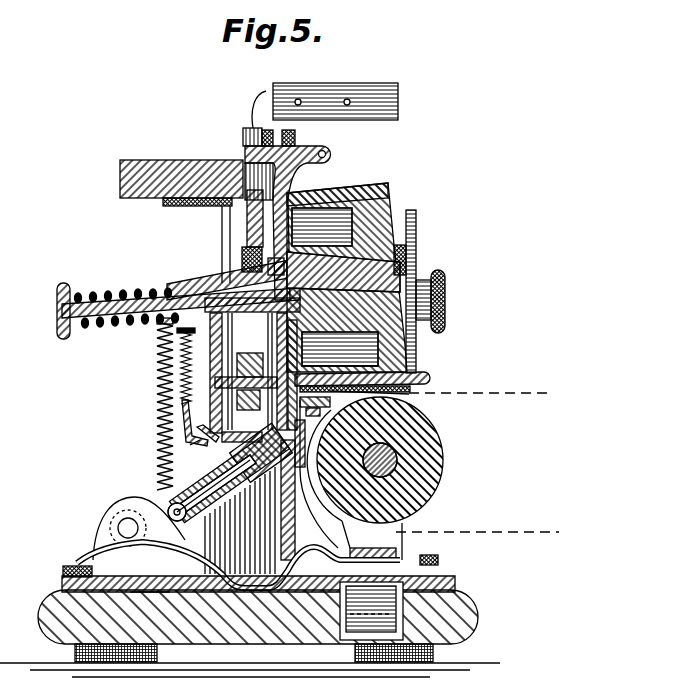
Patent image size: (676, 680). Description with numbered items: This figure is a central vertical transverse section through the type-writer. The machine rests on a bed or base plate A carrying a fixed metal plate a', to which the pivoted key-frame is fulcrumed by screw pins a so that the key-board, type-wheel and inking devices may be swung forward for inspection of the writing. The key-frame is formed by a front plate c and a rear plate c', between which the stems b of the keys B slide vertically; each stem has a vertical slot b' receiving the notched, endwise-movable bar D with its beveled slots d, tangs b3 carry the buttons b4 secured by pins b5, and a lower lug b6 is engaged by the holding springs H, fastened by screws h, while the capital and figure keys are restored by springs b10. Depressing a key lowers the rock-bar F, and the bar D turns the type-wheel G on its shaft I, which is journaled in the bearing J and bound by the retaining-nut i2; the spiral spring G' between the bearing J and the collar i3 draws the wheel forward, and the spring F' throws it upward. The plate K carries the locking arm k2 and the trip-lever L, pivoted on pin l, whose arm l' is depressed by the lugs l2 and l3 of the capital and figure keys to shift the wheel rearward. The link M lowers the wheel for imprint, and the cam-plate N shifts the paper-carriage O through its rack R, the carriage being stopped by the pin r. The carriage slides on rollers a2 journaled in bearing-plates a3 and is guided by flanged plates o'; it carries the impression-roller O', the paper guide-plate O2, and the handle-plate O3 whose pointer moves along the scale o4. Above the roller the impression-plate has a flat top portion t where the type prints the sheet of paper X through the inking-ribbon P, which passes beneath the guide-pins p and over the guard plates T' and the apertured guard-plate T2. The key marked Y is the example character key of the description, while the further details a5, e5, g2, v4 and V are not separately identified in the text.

The keys B is at (196, 158).
The key buttons b4 is at (375, 92).
The pins b5 is at (304, 102).
The capital-key lug l2 is at (250, 127).
The figure-key lug l3 is at (296, 139).
The trip-lever arm l' is at (247, 169).
The trip-lever L is at (288, 223).
The pivot pin l is at (331, 148).
The key-stem slot b' is at (255, 218).
The block a5 is at (241, 257).
The key tangs b3 is at (190, 207).
The front plate c is at (213, 244).
The shaft bearing J is at (190, 283).
The spiral spring G' is at (181, 293).
The type-wheel shaft I is at (104, 322).
The retaining collar i3 is at (57, 298).
The spring F' is at (135, 406).
The key springs b10 is at (161, 372).
The spring e5 is at (190, 366).
The springs H is at (195, 419).
The notched bar D is at (241, 373).
The rear plate c' is at (246, 363).
The bar slots d is at (247, 428).
The type-wheel G is at (361, 266).
The flat platen portion t is at (340, 349).
The plate K is at (340, 361).
The head top g2 is at (345, 195).
The lock arm k2 is at (396, 205).
The retaining-nut i2 is at (404, 262).
The key Y is at (418, 270).
The knob v4 is at (445, 292).
The inking-ribbon P is at (430, 378).
The guide-pins p is at (428, 376).
The guard plates T' is at (479, 400).
The guard-plate T2 is at (492, 407).
The sheet of paper X is at (535, 394).
The cam-plate N is at (314, 395).
The screws h is at (312, 413).
The impression-roller O' is at (382, 472).
The paper-carriage O is at (405, 481).
The paper-holding guide plate O2 is at (400, 552).
The flanged guide plates o' is at (374, 555).
The paper-carriage rack R is at (300, 453).
The column V is at (291, 500).
The link M is at (240, 520).
The rock-bar F is at (230, 476).
The stop pin r is at (219, 486).
The key lug b6 is at (207, 440).
The key stems b is at (190, 452).
The handle-plate O3 is at (70, 552).
The scale o4 is at (63, 571).
The metal plate a' is at (269, 581).
The bed-plate A is at (258, 617).
The pivot pins a is at (150, 602).
The anti-friction rollers a2 is at (357, 611).
The bearing-plates a3 is at (254, 638).